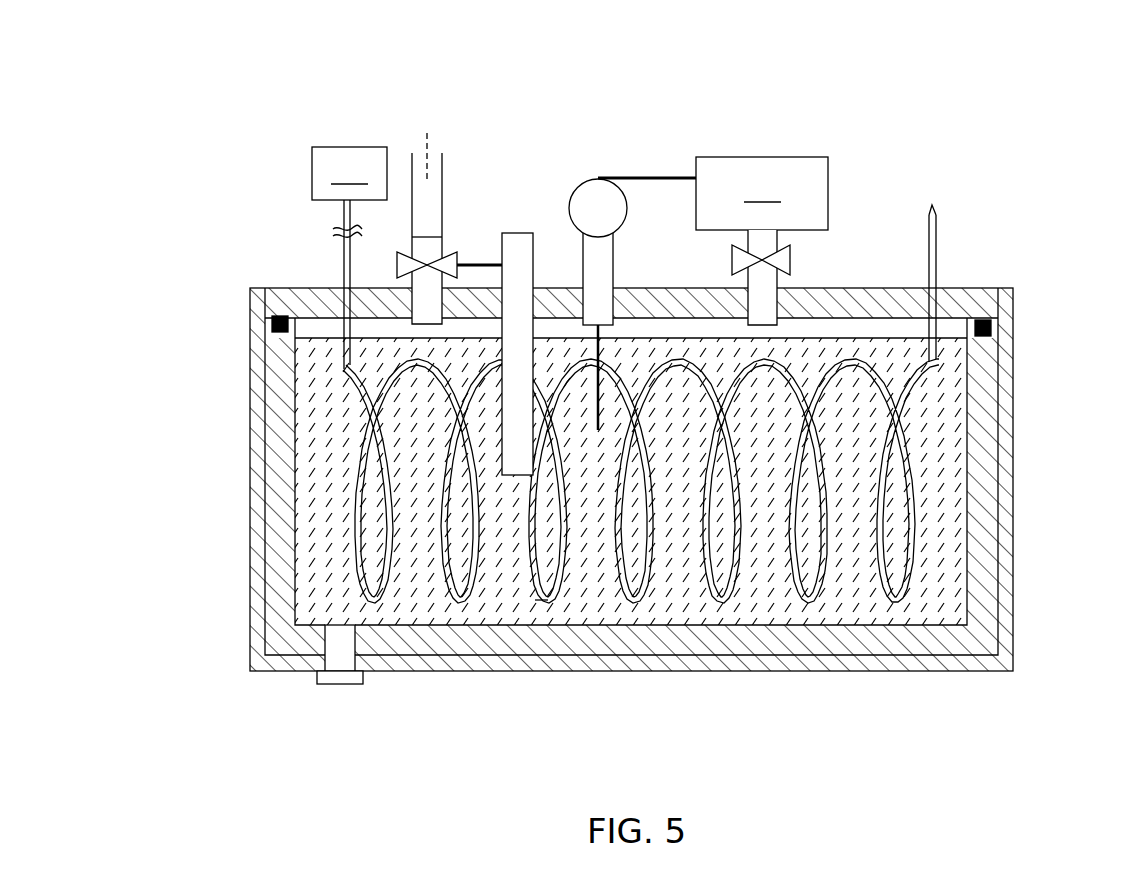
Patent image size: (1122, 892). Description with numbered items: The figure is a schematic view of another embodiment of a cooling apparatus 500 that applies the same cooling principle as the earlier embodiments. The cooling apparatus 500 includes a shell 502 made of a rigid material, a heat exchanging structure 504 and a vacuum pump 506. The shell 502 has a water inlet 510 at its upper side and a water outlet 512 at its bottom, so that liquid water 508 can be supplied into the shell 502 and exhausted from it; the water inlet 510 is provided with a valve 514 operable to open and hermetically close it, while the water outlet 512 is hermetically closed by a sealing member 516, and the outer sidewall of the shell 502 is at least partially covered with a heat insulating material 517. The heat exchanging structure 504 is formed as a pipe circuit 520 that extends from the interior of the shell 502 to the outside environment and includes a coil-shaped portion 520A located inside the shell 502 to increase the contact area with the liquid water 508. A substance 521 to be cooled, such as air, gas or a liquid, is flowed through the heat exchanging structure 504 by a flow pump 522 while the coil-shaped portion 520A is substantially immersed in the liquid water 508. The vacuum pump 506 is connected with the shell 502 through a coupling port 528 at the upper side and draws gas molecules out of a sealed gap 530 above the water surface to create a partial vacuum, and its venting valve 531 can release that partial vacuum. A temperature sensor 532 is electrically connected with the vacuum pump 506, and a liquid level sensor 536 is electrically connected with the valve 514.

The cooling apparatus 500 is at (120, 66).
The shell 502 is at (990, 500).
The heat exchanging structure 504 is at (633, 520).
The vacuum pump 506 is at (762, 193).
The liquid water 508 is at (960, 567).
The water inlet 510 is at (412, 300).
The water outlet 512 is at (318, 640).
The valve 514 is at (458, 255).
The sealing member 516 is at (345, 684).
The heat insulating material 517 is at (1013, 621).
The pipe circuit 520 is at (937, 355).
The coil-shaped portion 520A is at (545, 603).
The substance 521 is at (343, 242).
The flow pump 522 is at (349, 173).
The coupling port 528 is at (777, 279).
The sealed gap 530 is at (884, 336).
The venting valve 531 is at (790, 256).
The temperature sensor 532 is at (589, 183).
The liquid level sensor 536 is at (519, 240).